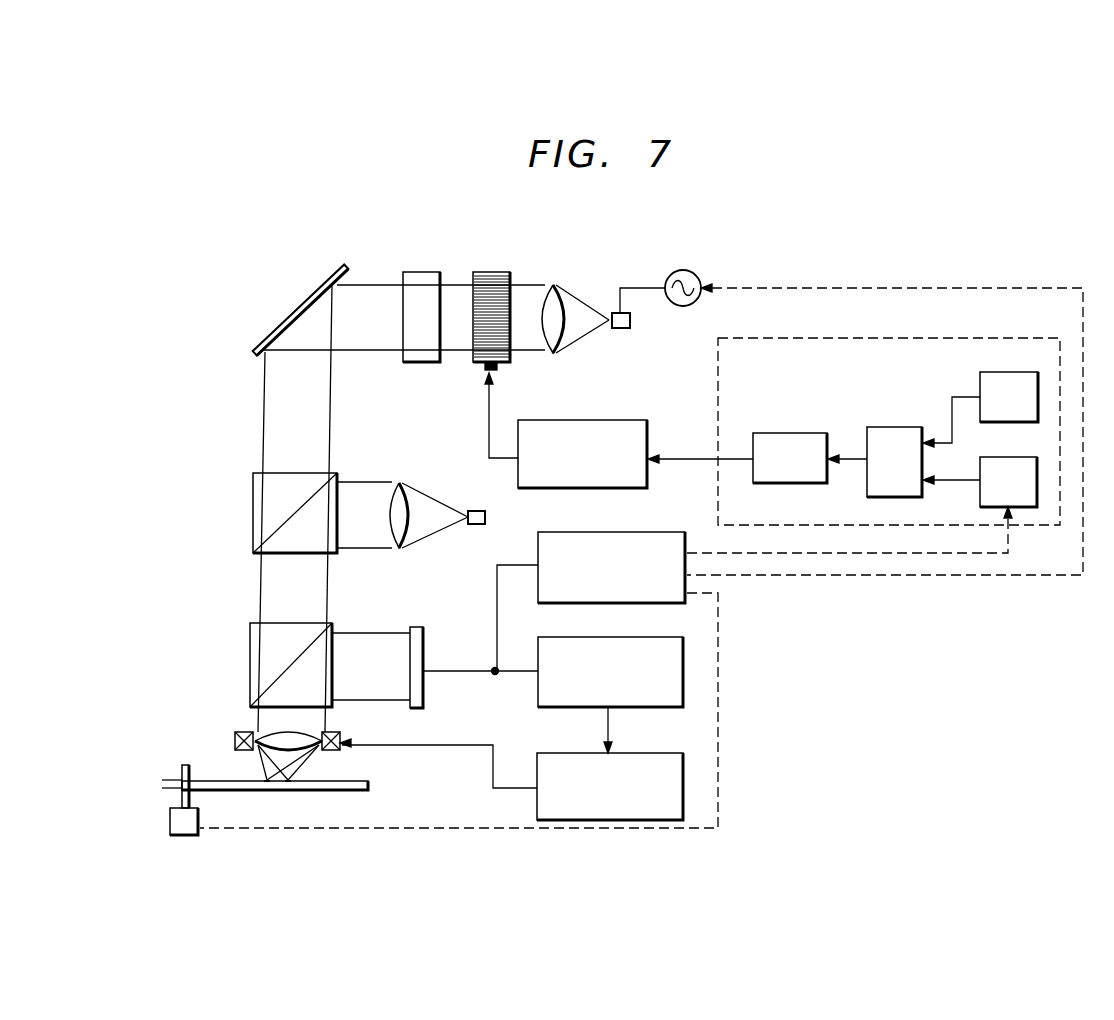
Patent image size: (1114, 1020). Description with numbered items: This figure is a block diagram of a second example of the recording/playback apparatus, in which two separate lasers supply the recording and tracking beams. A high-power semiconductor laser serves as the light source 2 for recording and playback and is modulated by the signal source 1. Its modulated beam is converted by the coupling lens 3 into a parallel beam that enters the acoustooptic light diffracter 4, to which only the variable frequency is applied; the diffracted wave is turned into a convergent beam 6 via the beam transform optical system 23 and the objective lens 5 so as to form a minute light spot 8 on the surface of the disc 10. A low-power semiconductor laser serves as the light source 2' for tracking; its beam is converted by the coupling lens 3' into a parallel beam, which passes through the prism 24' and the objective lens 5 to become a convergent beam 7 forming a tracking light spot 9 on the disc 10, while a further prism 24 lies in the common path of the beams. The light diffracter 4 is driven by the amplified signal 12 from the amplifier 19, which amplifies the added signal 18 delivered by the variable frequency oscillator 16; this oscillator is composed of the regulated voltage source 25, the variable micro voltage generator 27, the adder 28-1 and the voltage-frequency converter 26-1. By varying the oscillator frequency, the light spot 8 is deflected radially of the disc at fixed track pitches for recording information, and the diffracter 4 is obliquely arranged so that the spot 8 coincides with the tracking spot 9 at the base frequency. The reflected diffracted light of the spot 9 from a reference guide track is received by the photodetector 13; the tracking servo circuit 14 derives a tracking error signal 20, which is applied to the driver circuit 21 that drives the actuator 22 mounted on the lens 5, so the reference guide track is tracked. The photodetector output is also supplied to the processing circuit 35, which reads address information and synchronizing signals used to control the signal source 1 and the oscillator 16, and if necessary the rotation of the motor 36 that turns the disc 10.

The signal source 1 is at (696, 275).
The light source 2 is at (638, 325).
The light source for tracking 2' is at (489, 500).
The coupling lens 3 is at (575, 293).
The coupling lens 3' is at (429, 497).
The light diffracter 4 is at (492, 272).
The objective lens 5 is at (270, 733).
The convergent beam 6 is at (260, 760).
The convergent beam 7 is at (320, 751).
The light spot 8 is at (262, 779).
The light spot 9 is at (293, 779).
The disc 10 is at (370, 782).
The amplified signal 12 is at (490, 398).
The photodetector 13 is at (415, 627).
The tracking servo circuit 14 is at (628, 637).
The variable frequency oscillator 16 is at (806, 338).
The added signal 18 is at (690, 462).
The amplifier 19 is at (572, 420).
The tracking error signal 20 is at (612, 724).
The driver circuit 21 is at (660, 753).
The actuator 22 is at (235, 740).
The beam transform optical system 23 is at (420, 272).
The beam splitter 24 is at (293, 665).
The prism 24' is at (285, 513).
The regulated voltage source 25 is at (1010, 372).
The voltage-frequency converter 26-1 is at (796, 429).
The variable micro voltage generator 27 is at (1012, 457).
The adder 28-1 is at (897, 422).
The processing circuit 35 is at (622, 532).
The motor 36 is at (170, 814).